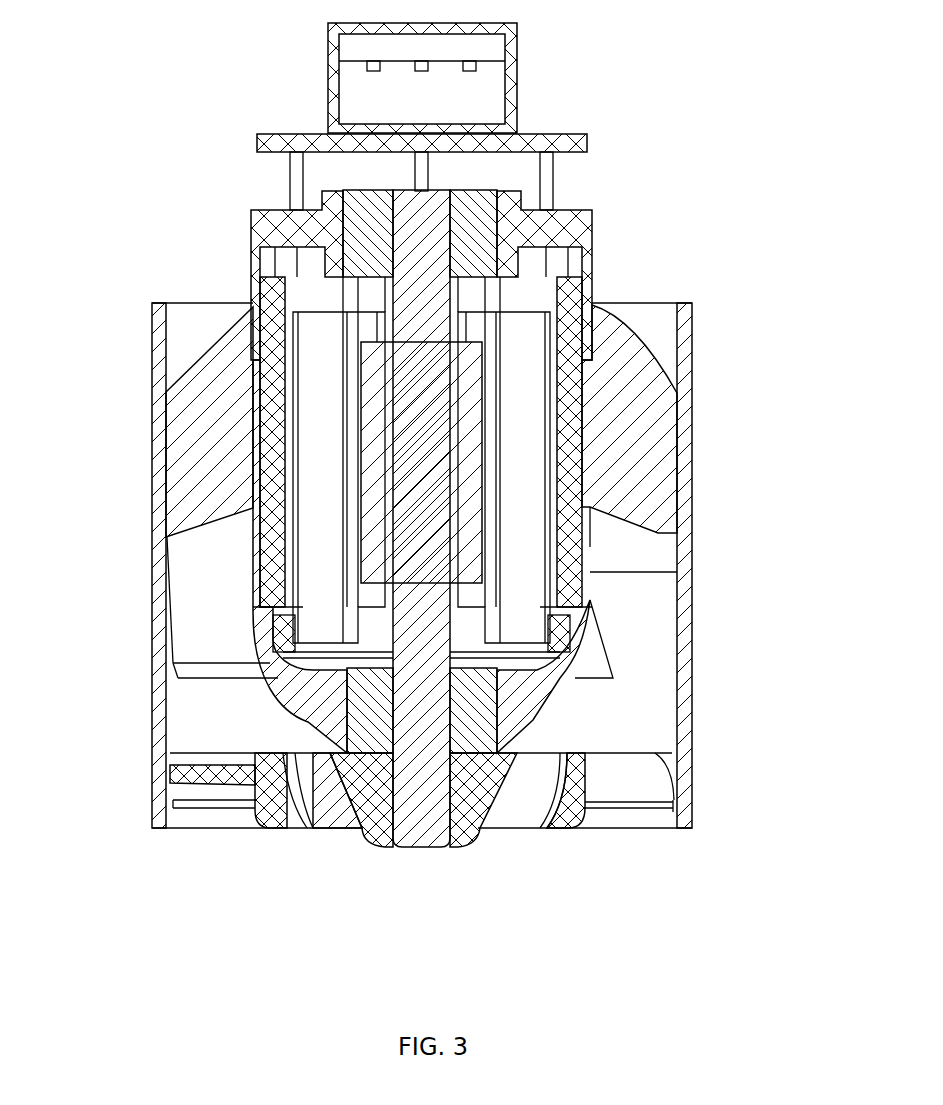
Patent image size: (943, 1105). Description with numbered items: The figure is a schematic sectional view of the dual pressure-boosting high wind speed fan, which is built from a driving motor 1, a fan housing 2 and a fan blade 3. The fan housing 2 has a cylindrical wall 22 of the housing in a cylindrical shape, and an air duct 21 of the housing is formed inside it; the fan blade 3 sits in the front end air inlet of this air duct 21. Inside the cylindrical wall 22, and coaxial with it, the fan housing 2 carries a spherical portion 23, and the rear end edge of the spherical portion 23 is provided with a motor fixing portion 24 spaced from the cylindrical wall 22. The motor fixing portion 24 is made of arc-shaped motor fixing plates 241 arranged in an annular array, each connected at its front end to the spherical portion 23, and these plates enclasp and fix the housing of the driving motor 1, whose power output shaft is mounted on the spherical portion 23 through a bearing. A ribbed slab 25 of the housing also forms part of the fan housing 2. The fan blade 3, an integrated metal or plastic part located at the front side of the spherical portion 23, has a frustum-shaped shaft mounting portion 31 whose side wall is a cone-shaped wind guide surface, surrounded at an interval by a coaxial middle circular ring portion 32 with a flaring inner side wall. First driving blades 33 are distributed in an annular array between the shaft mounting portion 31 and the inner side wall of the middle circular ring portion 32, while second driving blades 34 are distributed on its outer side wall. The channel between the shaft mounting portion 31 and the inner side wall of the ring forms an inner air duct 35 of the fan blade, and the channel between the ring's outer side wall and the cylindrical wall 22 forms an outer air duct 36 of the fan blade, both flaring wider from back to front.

The driving motor 1 is at (578, 193).
The fan housing 2 is at (437, 552).
The air duct of housing 21 is at (250, 717).
The cylindrical wall of housing 22 is at (692, 657).
The spherical portion 23 is at (523, 702).
The motor fixing portion 24 is at (590, 545).
The motor fixing plate 241 is at (692, 572).
The ribbed slab of housing 25 is at (235, 425).
The fan blade 3 is at (438, 811).
The shaft mounting portion 31 is at (363, 828).
The middle circular ring portion 32 is at (260, 828).
The first driving blade 33 is at (525, 800).
The second driving blade 34 is at (180, 785).
The inner air duct of fan blade 35 is at (540, 773).
The outer air duct of fan blade 36 is at (217, 827).